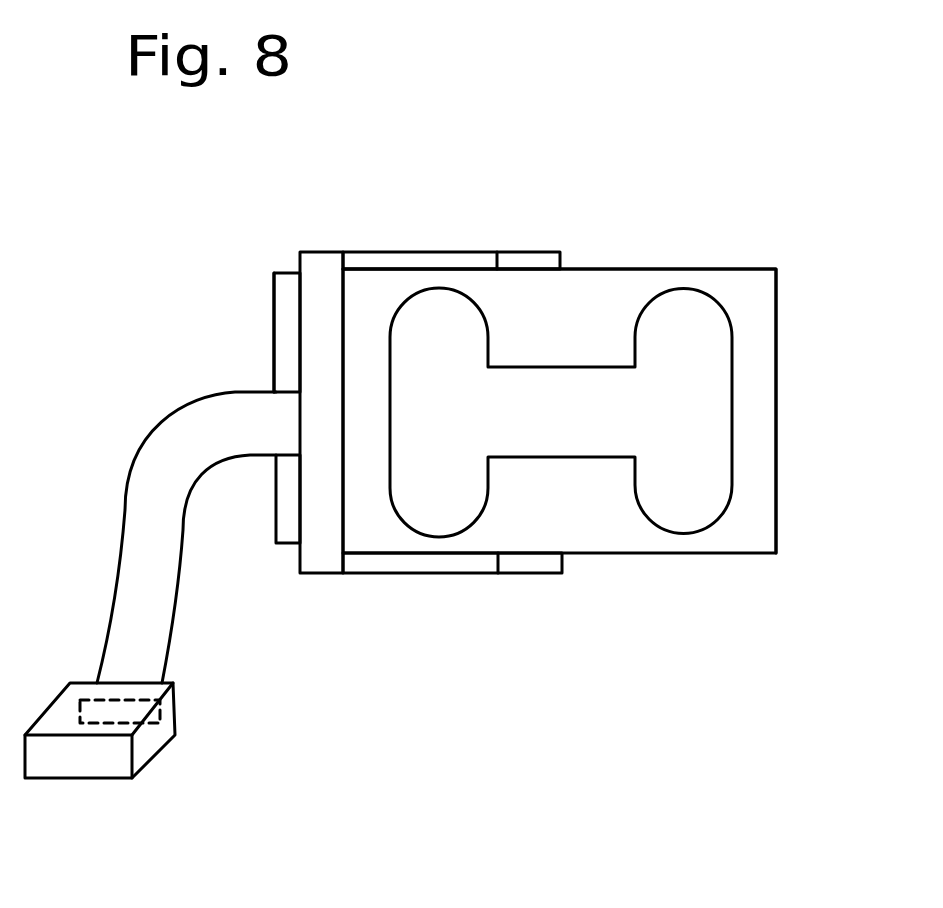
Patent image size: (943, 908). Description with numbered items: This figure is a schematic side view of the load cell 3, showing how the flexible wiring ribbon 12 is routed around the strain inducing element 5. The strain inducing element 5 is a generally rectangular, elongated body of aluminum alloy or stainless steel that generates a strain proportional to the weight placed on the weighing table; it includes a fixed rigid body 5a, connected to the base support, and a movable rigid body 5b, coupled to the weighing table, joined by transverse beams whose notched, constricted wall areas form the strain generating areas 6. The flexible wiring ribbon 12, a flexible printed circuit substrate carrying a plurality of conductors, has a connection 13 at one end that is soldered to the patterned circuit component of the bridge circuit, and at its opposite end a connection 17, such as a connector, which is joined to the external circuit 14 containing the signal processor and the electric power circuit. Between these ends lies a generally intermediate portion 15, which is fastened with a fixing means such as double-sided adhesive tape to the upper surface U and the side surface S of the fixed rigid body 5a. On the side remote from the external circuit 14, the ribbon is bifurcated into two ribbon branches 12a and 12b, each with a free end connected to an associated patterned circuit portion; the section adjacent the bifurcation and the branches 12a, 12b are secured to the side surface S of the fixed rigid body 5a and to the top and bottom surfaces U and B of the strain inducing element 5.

The load cell 3 is at (790, 344).
The strain inducing element 5 is at (747, 268).
The strain generating areas 6 is at (690, 280).
The fixed rigid body 5a is at (368, 533).
The movable rigid body 5b is at (750, 527).
The flexible wiring ribbon 12 is at (127, 507).
The ribbon branch 12a is at (432, 260).
The ribbon branch 12b is at (467, 573).
The connection 13 is at (538, 260).
The upper surface U is at (287, 273).
The side surface S is at (287, 340).
The bottom surface B is at (291, 545).
The intermediate portion 15 is at (188, 430).
The external circuit 14 is at (157, 742).
The connection 17 is at (123, 702).